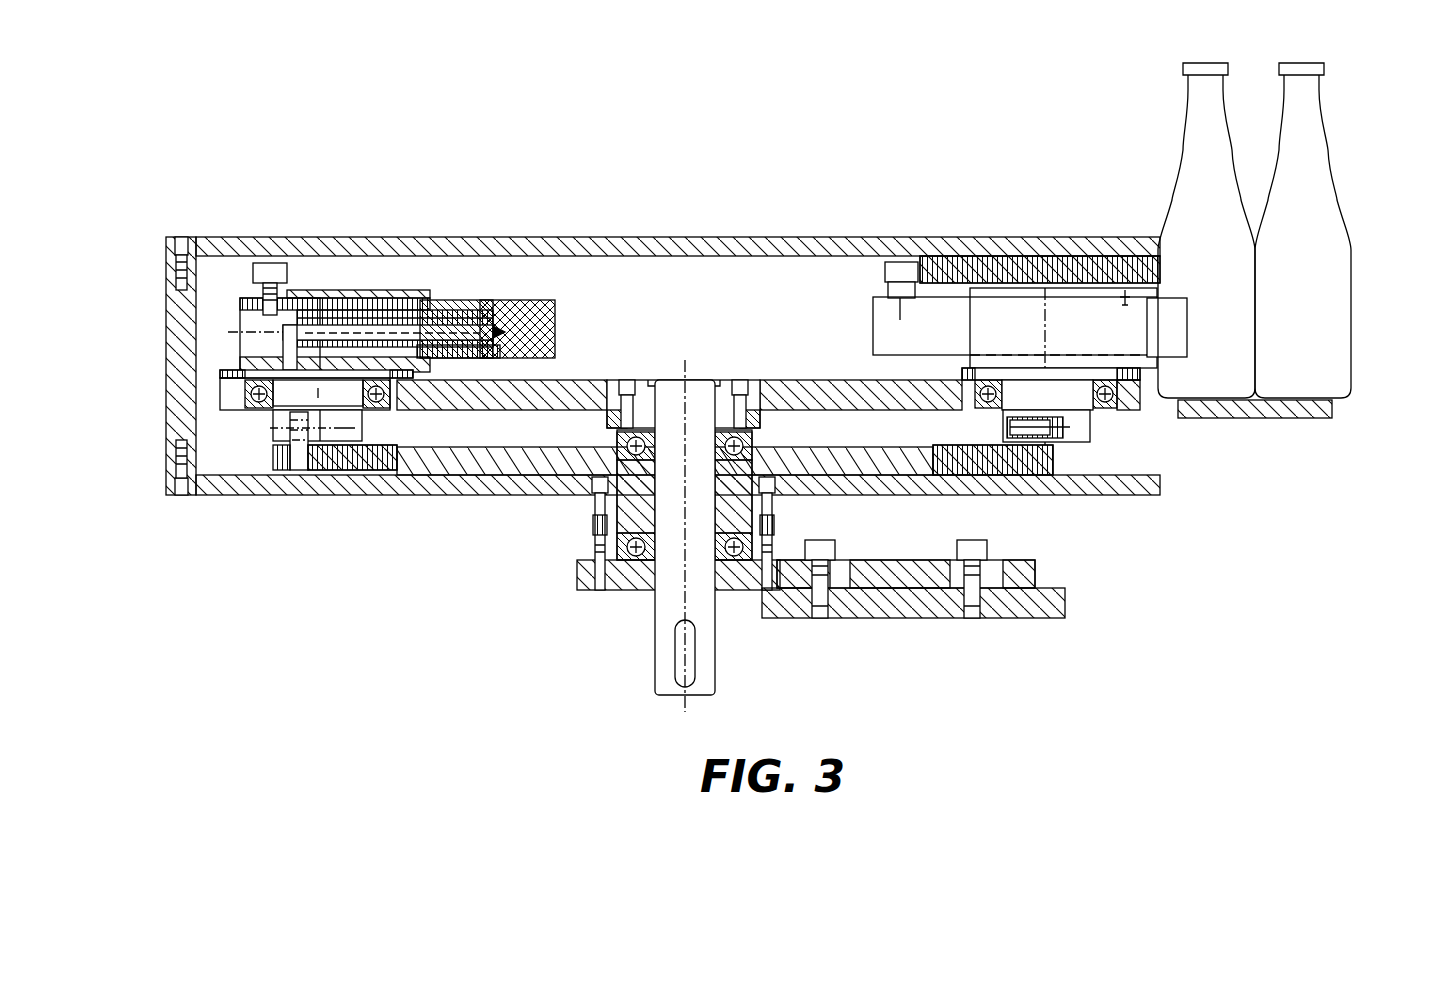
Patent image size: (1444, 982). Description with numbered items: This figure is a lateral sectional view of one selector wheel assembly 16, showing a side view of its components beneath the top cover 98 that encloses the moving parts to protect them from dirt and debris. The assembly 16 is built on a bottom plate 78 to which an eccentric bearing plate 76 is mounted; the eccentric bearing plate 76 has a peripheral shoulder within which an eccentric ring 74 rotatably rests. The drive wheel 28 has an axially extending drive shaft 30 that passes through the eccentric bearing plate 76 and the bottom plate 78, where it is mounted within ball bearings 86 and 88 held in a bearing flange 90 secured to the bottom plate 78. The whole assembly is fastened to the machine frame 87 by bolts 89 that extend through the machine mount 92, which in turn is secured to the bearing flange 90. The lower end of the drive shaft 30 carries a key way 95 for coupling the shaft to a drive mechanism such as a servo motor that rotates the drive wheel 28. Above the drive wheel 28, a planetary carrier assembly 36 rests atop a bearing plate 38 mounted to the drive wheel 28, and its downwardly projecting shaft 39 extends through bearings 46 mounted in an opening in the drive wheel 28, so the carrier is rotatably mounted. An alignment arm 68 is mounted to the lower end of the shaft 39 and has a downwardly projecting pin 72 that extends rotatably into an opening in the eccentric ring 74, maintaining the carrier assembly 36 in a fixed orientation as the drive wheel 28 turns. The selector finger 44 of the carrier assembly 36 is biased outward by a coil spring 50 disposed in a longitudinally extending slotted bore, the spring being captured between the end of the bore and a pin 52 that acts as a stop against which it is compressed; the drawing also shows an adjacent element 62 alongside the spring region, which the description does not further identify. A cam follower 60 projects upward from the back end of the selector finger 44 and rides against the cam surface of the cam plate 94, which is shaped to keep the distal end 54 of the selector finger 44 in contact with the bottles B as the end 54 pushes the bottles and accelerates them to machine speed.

The selector wheel assembly 16 is at (172, 178).
The top cover 98 is at (735, 240).
The bottom plate 78 is at (466, 496).
The eccentric bearing plate 76 is at (515, 446).
The drive wheel 28 is at (776, 379).
The planetary carrier assembly 36 is at (215, 308).
The cam follower 60 is at (288, 272).
The spring 62 is at (363, 292).
The pin 52 is at (284, 334).
The coil spring 50 is at (445, 300).
The selector finger 44 is at (530, 300).
The bearing plate 38 is at (266, 378).
The bearing 46 is at (256, 394).
The shaft 39 is at (365, 422).
The pin 72 is at (297, 478).
The eccentric ring 74 is at (344, 478).
The alignment arm 68 is at (275, 432).
The ball bearing 86 is at (700, 432).
The bearing flange 90 is at (585, 535).
The drive shaft 30 is at (665, 604).
The key way 95 is at (692, 660).
The ball bearing 88 is at (748, 575).
The machine mount 92 is at (884, 562).
The machine frame 87 is at (1015, 620).
The bolt 89 is at (826, 545).
The cam plate 94 is at (1012, 268).
The distal end 54 is at (1178, 345).
The bottles B is at (1352, 298).